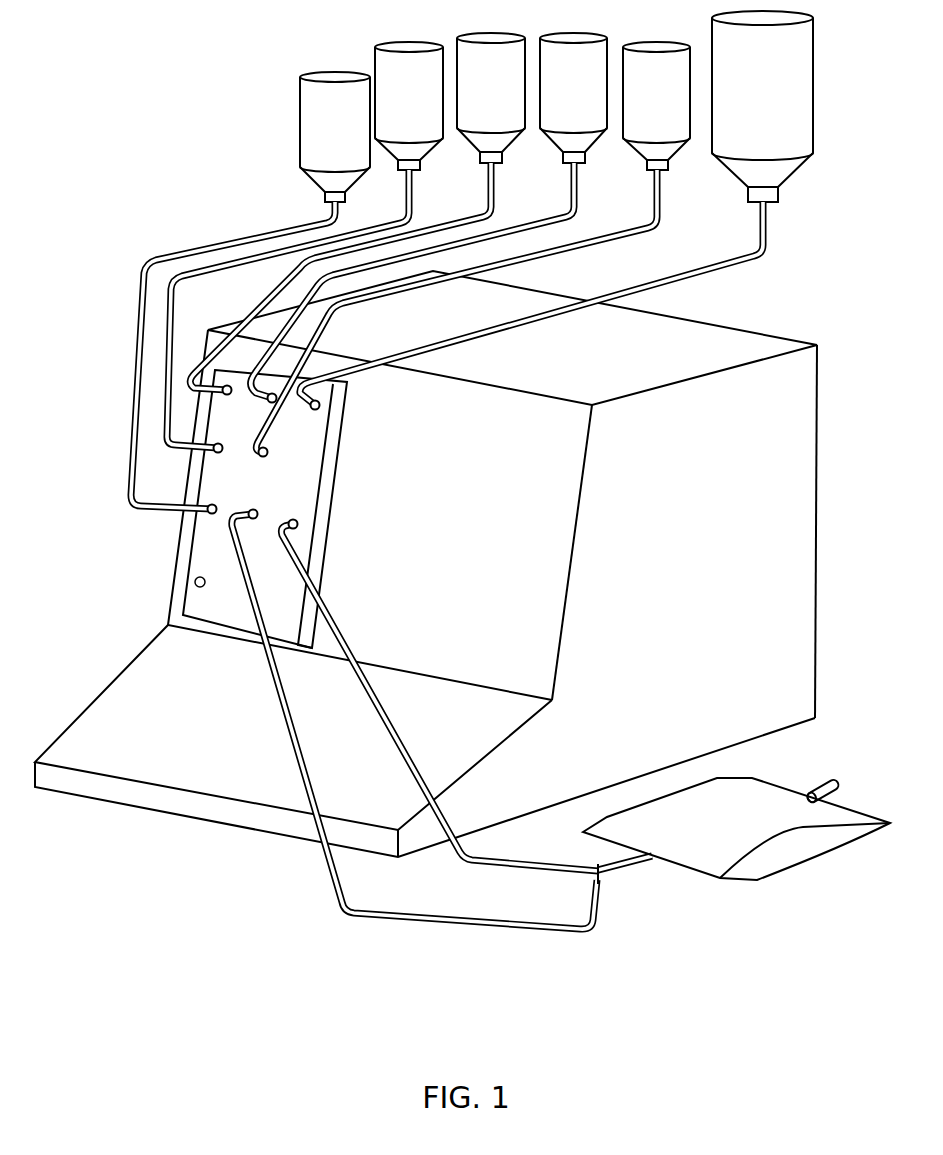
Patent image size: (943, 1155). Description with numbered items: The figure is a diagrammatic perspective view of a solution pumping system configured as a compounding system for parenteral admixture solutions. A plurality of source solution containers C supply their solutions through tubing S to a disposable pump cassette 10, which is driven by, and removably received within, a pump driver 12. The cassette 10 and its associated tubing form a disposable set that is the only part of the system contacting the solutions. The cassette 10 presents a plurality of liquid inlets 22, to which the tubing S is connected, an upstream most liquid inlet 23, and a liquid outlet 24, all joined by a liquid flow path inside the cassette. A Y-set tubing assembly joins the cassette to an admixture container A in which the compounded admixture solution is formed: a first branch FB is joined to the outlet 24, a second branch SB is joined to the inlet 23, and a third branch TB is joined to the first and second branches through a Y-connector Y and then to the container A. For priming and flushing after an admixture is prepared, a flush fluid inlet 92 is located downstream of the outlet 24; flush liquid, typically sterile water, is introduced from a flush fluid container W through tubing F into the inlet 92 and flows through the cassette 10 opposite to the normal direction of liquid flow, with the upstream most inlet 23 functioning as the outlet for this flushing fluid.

The disposable pump cassette 10 is at (326, 495).
The pump driver 12 is at (741, 318).
The liquid inlets 22 is at (267, 400).
The upstream most liquid inlet 23 is at (255, 508).
The liquid outlet 24 is at (299, 524).
The flush fluid inlet 92 is at (319, 408).
The tubing S is at (237, 261).
The tubing F is at (543, 321).
The first branch FB is at (383, 700).
The second branch SB is at (372, 920).
The third branch TB is at (647, 862).
The Y-connector Y is at (605, 878).
The admixture container A is at (690, 836).
The containers C is at (342, 131).
The flush fluid container W is at (771, 93).